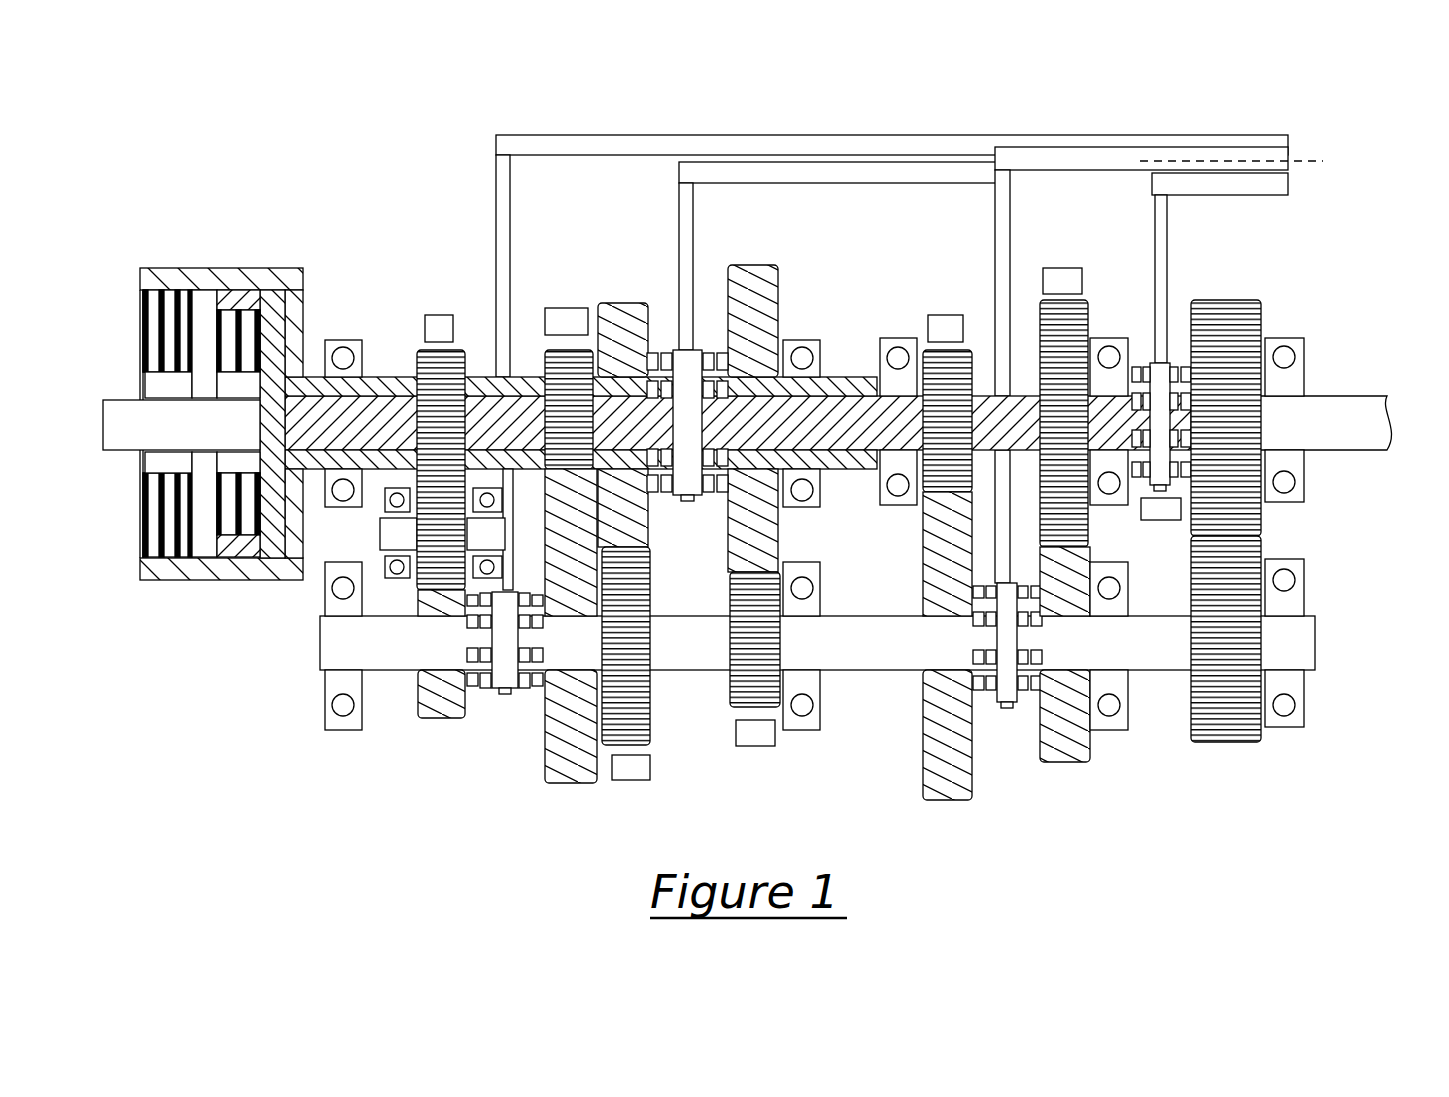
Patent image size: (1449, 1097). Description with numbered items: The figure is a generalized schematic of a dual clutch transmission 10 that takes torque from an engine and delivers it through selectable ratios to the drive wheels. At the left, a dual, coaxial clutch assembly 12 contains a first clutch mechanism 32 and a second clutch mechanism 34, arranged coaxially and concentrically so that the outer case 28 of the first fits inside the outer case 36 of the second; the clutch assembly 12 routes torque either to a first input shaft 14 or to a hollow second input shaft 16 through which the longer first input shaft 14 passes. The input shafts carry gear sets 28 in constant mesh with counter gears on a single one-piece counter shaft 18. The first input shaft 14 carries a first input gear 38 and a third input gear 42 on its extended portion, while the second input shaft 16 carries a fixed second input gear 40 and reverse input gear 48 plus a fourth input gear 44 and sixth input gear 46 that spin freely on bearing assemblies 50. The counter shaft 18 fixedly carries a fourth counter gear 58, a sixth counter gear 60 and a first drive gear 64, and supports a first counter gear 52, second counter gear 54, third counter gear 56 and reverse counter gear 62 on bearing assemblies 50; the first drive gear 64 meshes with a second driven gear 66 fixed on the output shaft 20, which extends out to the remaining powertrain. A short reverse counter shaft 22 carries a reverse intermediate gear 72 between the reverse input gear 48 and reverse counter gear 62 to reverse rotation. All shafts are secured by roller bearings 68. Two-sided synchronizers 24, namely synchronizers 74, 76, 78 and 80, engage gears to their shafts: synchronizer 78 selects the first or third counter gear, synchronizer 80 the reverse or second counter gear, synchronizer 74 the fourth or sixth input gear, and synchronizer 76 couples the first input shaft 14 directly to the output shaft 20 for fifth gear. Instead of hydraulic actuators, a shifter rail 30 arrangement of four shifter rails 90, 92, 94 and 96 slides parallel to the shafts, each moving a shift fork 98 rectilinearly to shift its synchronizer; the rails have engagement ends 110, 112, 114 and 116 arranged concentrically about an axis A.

The dual clutch transmission 10 is at (400, 200).
The dual, coaxial clutch assembly 12 is at (252, 238).
The first input shaft 14 is at (985, 396).
The second input shaft 16 is at (388, 378).
The counter shaft 18 is at (320, 650).
The output shaft 20 is at (1390, 400).
The reverse counter shaft 22 is at (330, 580).
The synchronizers 24 is at (708, 305).
The gear sets 28 is at (290, 330).
The shifter rail 30 is at (562, 118).
The first clutch mechanism 32 is at (245, 320).
The second clutch mechanism 34 is at (178, 300).
The outer case 36 is at (305, 290).
The first input gear 38 is at (927, 345).
The second input gear 40 is at (548, 350).
The third input gear 42 is at (1088, 300).
The fourth input gear 44 is at (612, 303).
The sixth input gear 46 is at (778, 290).
The reverse input gear 48 is at (455, 350).
The bearing assemblies 50 is at (400, 720).
The first counter gear 52 is at (923, 740).
The second counter gear 54 is at (595, 783).
The third counter gear 56 is at (1050, 762).
The fourth counter gear 58 is at (650, 730).
The sixth counter gear 60 is at (735, 707).
The reverse counter gear 62 is at (418, 712).
The first drive gear 64 is at (1195, 740).
The second driven gear 66 is at (1262, 310).
The bearing assembly 68 is at (825, 342).
The reverse intermediate gear 72 is at (380, 527).
The synchronizer 74 is at (680, 350).
The synchronizer 76 is at (1172, 365).
The synchronizer 78 is at (1003, 705).
The synchronizer 80 is at (505, 690).
The shifter rail 90 is at (575, 165).
The shifter rail 92 is at (915, 185).
The shifter rail 94 is at (990, 170).
The shifter rail 96 is at (1150, 185).
The shift forks 98 is at (680, 205).
The engagement end 110 is at (1318, 137).
The engagement end 112 is at (1290, 178).
The engagement end 114 is at (1290, 152).
The engagement end 116 is at (1292, 195).